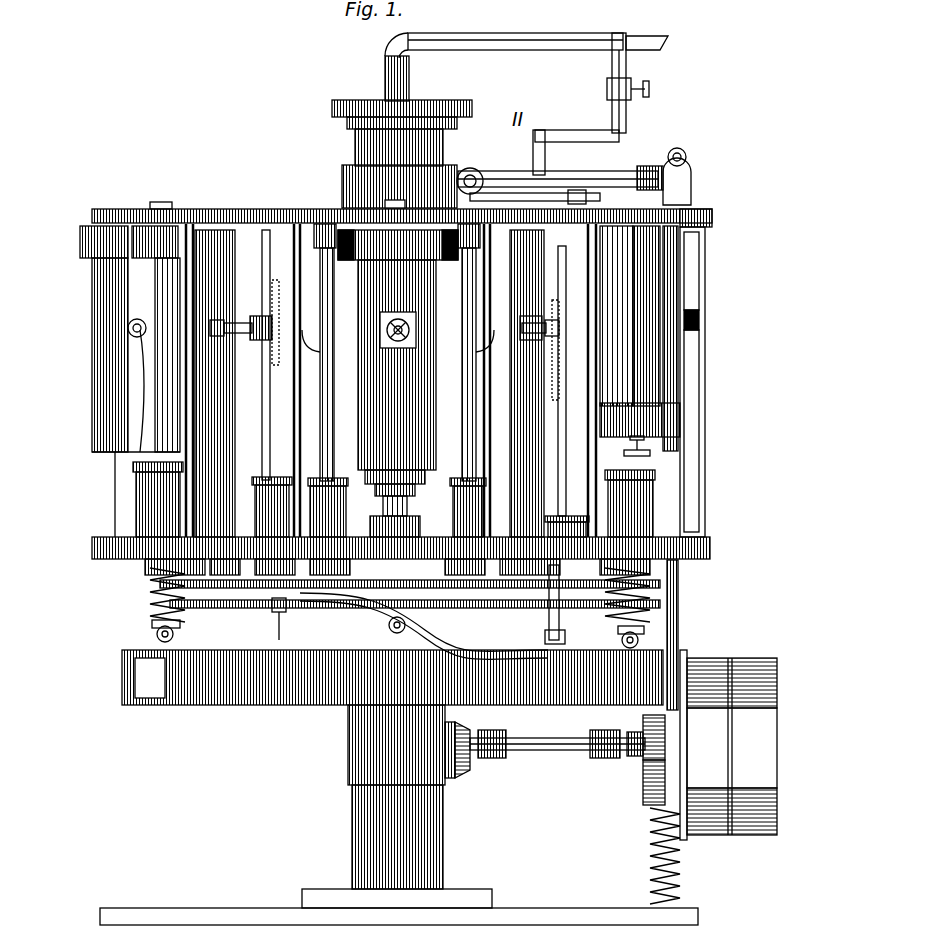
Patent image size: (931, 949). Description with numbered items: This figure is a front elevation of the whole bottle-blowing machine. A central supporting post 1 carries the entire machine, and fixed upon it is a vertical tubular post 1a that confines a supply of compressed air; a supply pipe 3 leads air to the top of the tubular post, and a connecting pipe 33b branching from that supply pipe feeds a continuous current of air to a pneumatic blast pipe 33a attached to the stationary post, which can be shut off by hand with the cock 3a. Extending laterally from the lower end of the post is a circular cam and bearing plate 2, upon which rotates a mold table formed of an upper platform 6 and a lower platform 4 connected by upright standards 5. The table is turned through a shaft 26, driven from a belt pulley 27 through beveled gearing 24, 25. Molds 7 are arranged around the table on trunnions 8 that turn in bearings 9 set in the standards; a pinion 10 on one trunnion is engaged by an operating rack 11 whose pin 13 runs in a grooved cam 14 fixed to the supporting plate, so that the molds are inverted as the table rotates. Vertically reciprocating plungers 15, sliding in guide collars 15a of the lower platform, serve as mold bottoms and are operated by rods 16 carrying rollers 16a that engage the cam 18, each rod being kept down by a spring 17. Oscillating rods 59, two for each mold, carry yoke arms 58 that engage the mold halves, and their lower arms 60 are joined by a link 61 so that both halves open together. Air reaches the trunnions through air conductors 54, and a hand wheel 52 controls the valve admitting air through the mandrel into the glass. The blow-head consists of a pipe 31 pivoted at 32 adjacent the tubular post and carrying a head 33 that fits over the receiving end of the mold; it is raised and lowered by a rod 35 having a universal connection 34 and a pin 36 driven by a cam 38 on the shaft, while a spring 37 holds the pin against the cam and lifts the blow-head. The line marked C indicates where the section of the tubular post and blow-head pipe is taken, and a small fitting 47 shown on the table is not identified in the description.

The central supporting post 1 is at (352, 805).
The tubular post 1a is at (355, 150).
The cam and bearing plate 2 is at (182, 705).
The supply pipe 3 is at (470, 50).
The cock 3a is at (650, 84).
The lower platform 4 is at (98, 540).
The upright standards 5 is at (198, 230).
The upper platform 6 is at (118, 209).
The molds 7 is at (95, 271).
The trunnions 8 is at (325, 350).
The bearings 9 is at (318, 310).
The pinion 10 is at (268, 318).
The operating rack 11 is at (272, 378).
The pin 13 is at (372, 600).
The grooved cam 14 is at (392, 677).
The plungers 15 is at (398, 470).
The guide collars 15a is at (150, 495).
The rods 16 is at (150, 600).
The rollers 16a is at (150, 650).
The spring 17 is at (155, 632).
The cam 18 is at (372, 630).
The beveled gearing 24 is at (462, 778).
The beveled gearing 25 is at (476, 758).
The shaft 26 is at (555, 752).
The belt pulley 27 is at (712, 658).
The pipe 31 is at (525, 170).
The pivot 32 is at (470, 168).
The blow-head 33 is at (648, 166).
The pneumatic blast pipe 33a is at (574, 190).
The connecting pipe 33b is at (612, 72).
The universal connection 34 is at (686, 178).
The rod 35 is at (678, 618).
The pin 36 is at (645, 800).
The spring 37 is at (650, 884).
The cam 38 is at (648, 768).
The screw 47 is at (165, 198).
The hand wheel 52 is at (130, 325).
The air conductors 54 is at (256, 340).
The yoke arms 58 is at (318, 360).
The oscillating rods 59 is at (262, 452).
The arms 60 is at (400, 596).
The link 61 is at (240, 605).
The section line C—D C is at (387, 186).